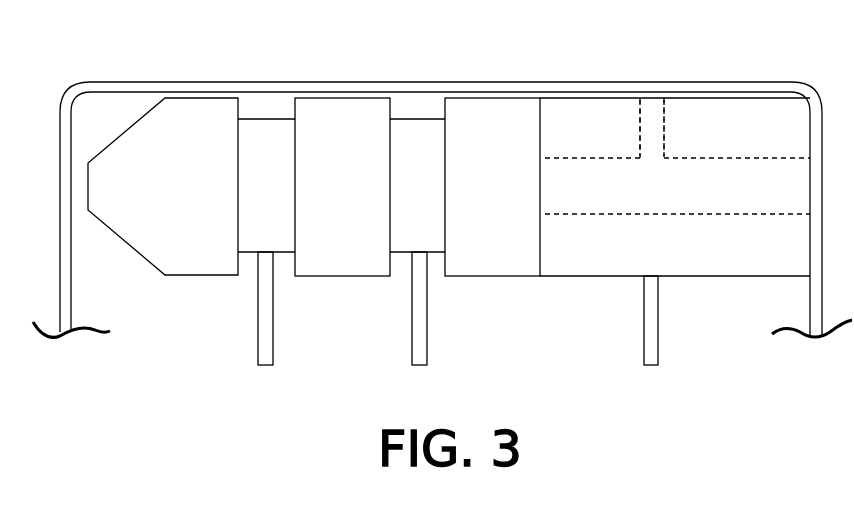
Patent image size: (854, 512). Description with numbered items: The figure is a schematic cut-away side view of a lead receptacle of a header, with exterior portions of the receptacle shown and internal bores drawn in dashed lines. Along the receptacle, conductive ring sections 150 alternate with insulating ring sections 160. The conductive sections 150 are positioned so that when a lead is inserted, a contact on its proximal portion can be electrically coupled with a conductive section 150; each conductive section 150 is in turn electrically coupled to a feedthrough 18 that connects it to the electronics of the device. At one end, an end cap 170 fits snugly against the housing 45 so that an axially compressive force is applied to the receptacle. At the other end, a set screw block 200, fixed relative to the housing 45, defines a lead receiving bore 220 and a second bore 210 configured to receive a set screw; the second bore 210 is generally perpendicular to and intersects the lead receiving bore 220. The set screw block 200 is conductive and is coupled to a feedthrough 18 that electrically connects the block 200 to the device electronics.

The housing 45 is at (72, 107).
The end cap 170 is at (200, 130).
The conductive ring section 150 is at (283, 138).
The insulating ring section 160 is at (350, 108).
The set screw block 200 is at (568, 123).
The second bore 210 is at (653, 113).
The lead receiving bore 220 is at (668, 204).
The feedthrough 18 is at (260, 331).